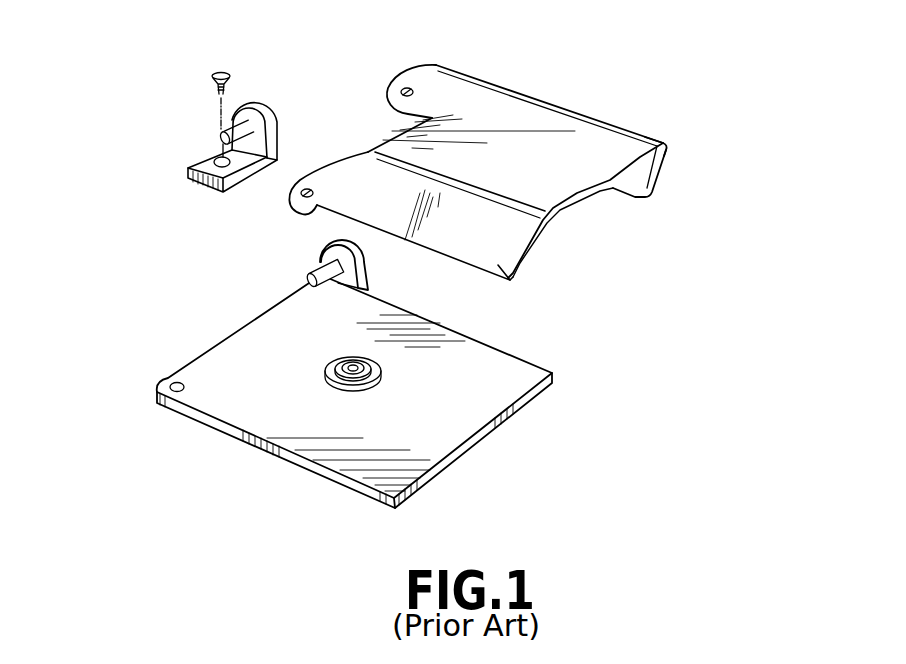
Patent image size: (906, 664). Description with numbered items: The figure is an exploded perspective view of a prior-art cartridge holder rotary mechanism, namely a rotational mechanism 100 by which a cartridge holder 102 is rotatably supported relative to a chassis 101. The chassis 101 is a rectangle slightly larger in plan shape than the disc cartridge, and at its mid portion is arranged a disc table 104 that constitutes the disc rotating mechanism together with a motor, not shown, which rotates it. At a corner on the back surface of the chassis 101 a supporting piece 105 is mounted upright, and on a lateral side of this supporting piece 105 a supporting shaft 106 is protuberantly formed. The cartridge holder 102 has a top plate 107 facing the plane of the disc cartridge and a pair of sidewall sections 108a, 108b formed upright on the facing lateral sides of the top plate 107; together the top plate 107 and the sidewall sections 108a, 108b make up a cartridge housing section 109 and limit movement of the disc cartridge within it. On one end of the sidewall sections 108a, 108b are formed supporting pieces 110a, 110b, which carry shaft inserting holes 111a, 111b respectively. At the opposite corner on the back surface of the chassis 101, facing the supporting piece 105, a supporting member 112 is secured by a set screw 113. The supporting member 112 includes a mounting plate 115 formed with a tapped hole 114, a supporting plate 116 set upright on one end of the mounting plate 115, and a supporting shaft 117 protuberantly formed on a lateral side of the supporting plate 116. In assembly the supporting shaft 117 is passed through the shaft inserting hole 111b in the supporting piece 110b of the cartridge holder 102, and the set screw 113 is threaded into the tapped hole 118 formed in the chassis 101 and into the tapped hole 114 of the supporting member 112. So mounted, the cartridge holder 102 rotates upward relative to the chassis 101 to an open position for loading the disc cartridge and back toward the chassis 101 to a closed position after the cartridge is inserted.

The rotational mechanism 100 is at (670, 67).
The chassis 101 is at (432, 423).
The cartridge holder 102 is at (497, 120).
The disc table 104 is at (383, 377).
The supporting piece 105 is at (372, 273).
The supporting shaft 106 is at (310, 290).
The top plate 107 is at (637, 138).
The sidewall section 108a is at (658, 186).
The sidewall section 108b is at (513, 282).
The cartridge housing section 109 is at (582, 200).
The supporting piece 110a is at (435, 65).
The supporting piece 110b is at (303, 210).
The shaft inserting hole 111a is at (393, 87).
The shaft inserting hole 111b is at (308, 186).
The supporting member 112 is at (263, 100).
The set screw 113 is at (223, 67).
The tapped hole 114 is at (210, 166).
The mounting plate 115 is at (220, 173).
The supporting plate 116 is at (273, 133).
The supporting shaft 117 is at (219, 138).
The tapped hole 118 is at (157, 403).